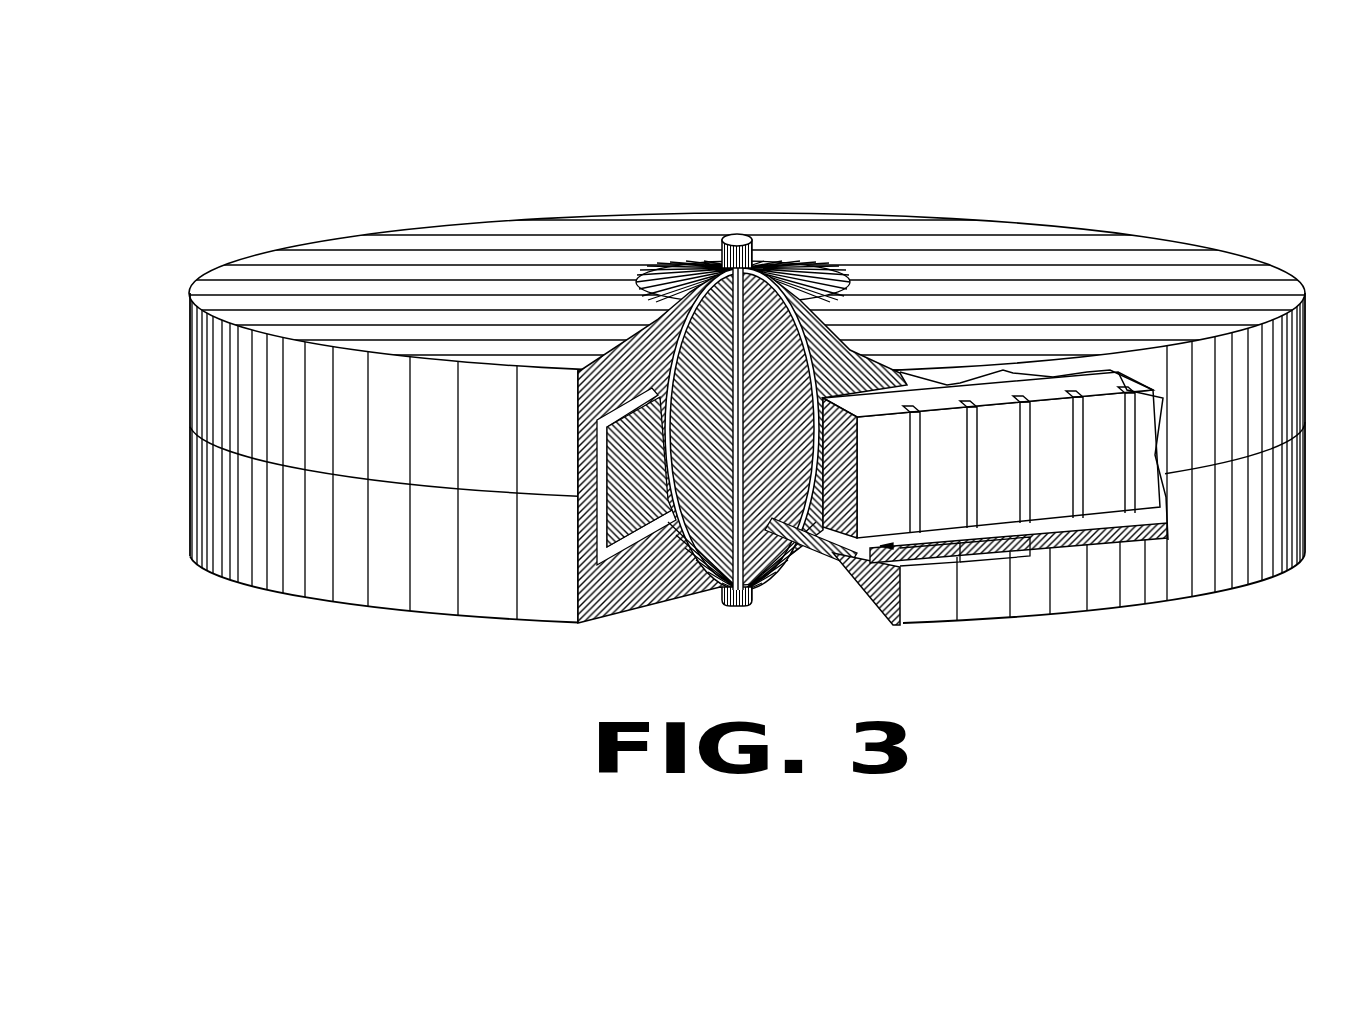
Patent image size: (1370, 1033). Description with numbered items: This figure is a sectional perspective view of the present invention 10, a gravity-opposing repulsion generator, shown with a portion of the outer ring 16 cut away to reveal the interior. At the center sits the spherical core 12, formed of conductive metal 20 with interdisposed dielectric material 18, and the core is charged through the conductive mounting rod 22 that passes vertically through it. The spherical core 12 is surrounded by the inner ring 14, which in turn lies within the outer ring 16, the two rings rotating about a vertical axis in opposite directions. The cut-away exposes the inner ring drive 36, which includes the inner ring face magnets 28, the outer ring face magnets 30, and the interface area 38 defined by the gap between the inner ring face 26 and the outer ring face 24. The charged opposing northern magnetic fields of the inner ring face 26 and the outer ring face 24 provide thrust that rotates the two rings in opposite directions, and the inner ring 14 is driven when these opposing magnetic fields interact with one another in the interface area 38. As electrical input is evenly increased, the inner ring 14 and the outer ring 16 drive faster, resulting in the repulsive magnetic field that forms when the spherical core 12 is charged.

The present invention 10 is at (988, 146).
The spherical core 12 is at (775, 258).
The inner ring 14 is at (832, 500).
The outer ring 16 is at (527, 557).
The dielectric material 18 is at (700, 383).
The conductive metal 20 is at (780, 367).
The conductive mounting rod 22 is at (737, 233).
The outer ring face 24 is at (927, 552).
The inner ring face 26 is at (967, 542).
The inner ring face magnets 28 is at (1127, 400).
The outer ring face magnets 30 is at (1145, 543).
The inner ring drive 36 is at (866, 552).
The interface area 38 is at (1168, 545).